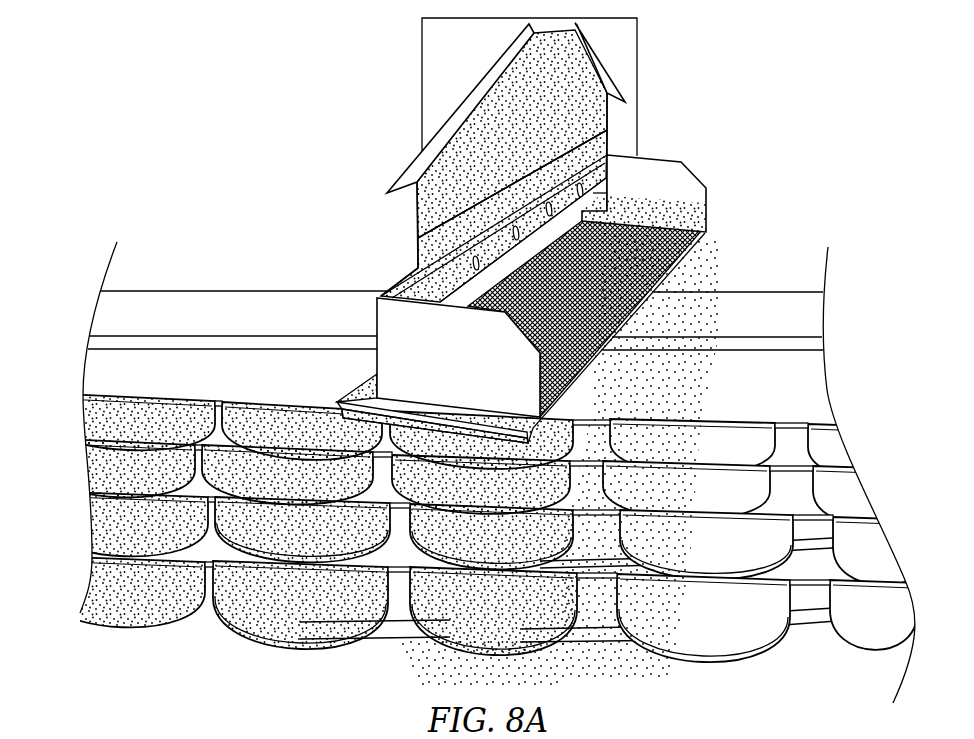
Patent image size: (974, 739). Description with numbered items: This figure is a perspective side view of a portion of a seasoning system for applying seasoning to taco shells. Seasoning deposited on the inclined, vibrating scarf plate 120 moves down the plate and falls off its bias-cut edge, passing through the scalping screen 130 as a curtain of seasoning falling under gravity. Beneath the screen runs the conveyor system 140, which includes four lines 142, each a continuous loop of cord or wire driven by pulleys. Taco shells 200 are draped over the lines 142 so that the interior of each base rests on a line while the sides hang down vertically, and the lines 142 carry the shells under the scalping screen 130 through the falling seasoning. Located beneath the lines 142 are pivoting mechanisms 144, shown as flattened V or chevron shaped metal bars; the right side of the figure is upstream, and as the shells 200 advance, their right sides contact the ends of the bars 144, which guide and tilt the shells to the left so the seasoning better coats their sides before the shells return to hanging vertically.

The scarf plate 120 is at (617, 58).
The scalping screen 130 is at (702, 165).
The conveyor system 140 is at (752, 305).
The lines 142 is at (810, 515).
The pivoting mechanisms 144 is at (593, 563).
The taco shells 200 is at (893, 545).